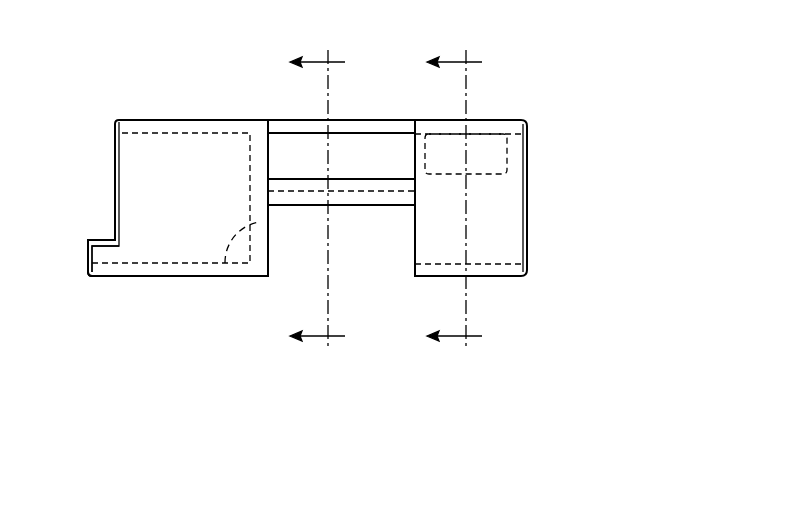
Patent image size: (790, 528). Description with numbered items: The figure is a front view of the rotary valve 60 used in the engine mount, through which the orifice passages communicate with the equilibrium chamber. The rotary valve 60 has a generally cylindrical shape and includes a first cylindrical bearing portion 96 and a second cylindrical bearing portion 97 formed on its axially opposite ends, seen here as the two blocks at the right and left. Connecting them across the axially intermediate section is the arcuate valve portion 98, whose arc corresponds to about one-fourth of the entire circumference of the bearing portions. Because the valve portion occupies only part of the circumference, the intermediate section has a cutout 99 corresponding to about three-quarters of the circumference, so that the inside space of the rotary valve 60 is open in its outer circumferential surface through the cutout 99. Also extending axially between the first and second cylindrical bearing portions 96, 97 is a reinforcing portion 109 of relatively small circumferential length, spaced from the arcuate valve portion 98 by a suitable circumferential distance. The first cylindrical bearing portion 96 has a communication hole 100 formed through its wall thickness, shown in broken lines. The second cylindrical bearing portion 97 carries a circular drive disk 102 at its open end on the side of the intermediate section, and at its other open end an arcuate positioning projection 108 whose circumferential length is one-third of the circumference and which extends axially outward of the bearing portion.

The rotary valve 60 is at (202, 66).
The first cylindrical bearing portion 96 is at (508, 230).
The second cylindrical bearing portion 97 is at (130, 183).
The arcuate valve portion 98 is at (360, 145).
The cutout 99 is at (413, 238).
The communication hole 100 is at (507, 157).
The drive disk 102 is at (225, 262).
The positioning projection 108 is at (98, 257).
The reinforcing portion 109 is at (312, 198).